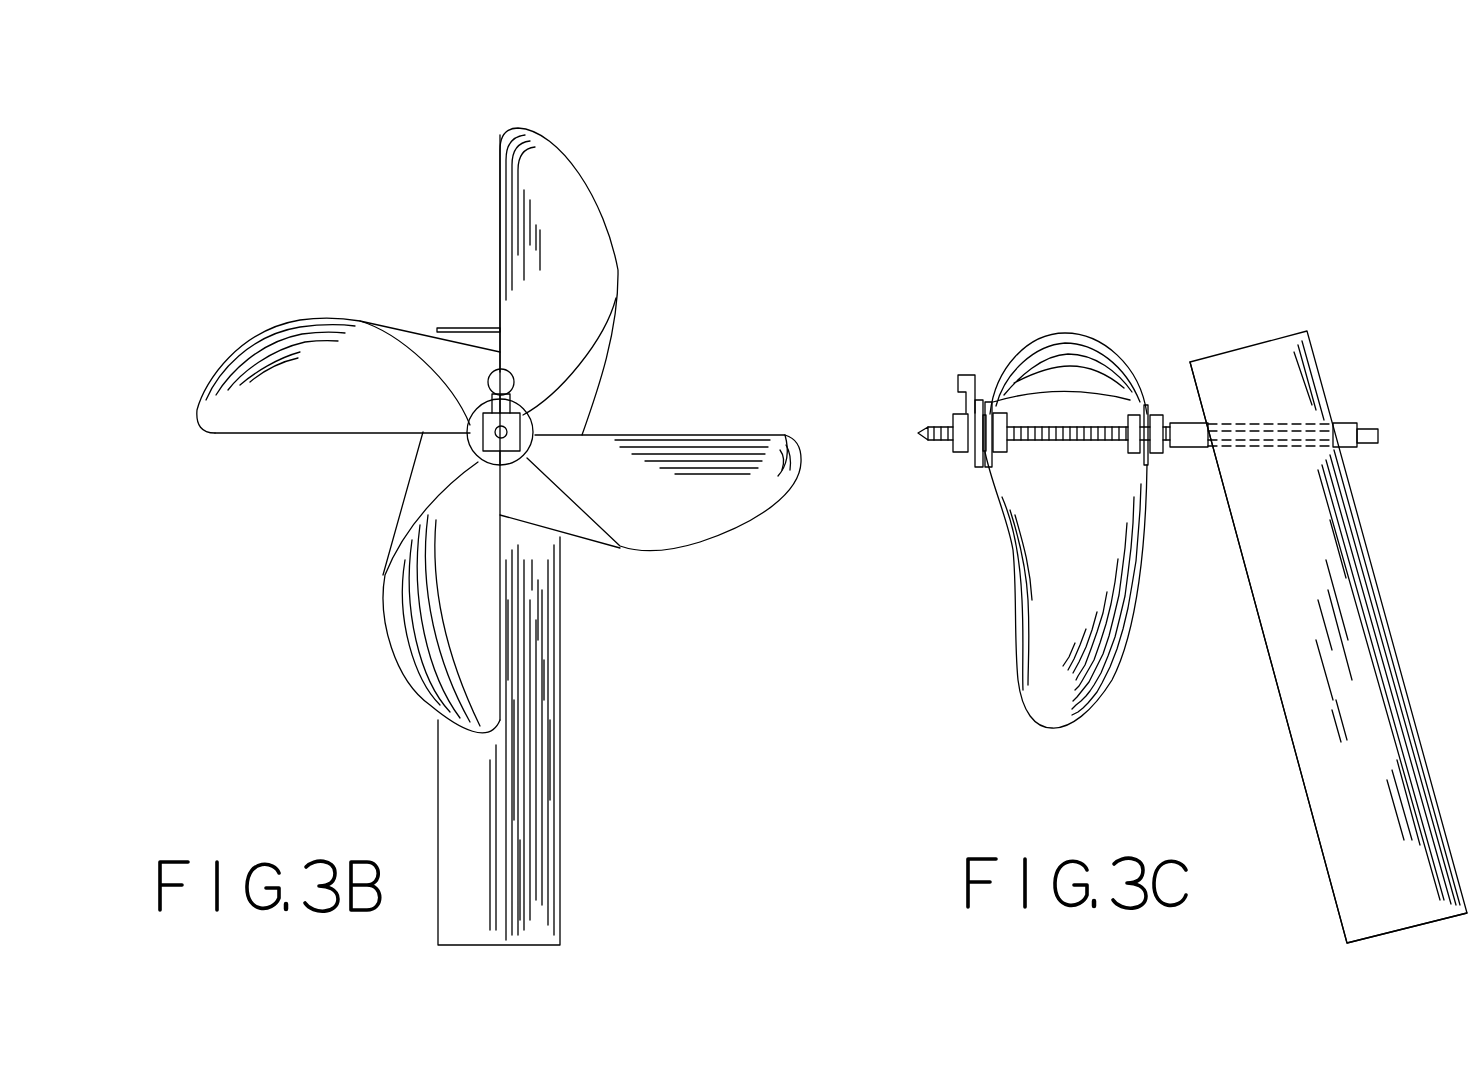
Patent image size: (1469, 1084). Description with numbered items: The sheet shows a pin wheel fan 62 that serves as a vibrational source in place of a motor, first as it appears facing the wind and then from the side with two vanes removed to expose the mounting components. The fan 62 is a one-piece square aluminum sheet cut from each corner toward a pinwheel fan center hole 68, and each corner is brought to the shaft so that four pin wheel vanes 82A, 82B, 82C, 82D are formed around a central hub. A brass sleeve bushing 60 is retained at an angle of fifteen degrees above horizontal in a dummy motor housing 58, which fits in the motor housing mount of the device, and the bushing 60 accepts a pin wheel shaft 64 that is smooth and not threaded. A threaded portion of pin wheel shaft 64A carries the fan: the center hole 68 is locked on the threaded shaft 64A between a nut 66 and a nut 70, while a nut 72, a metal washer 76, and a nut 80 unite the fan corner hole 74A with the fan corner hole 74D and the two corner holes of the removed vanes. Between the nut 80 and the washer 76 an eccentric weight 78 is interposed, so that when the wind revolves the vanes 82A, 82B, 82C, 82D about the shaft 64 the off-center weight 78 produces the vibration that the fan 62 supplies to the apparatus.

In FIG. 3B, the dummy motor housing 58 is at (482, 338).
In FIG. 3C, the dummy motor housing 58 is at (1336, 800).
In FIG. 3C, the sleeve bushing 60 is at (1340, 425).
In FIG. 3B, the pin wheel fan 62 is at (502, 423).
In FIG. 3C, the pin wheel shaft 64 is at (1180, 447).
In FIG. 3B, the threaded portion of pin wheel shaft 64A is at (503, 432).
In FIG. 3C, the threaded portion of pin wheel shaft 64A is at (932, 422).
In FIG. 3C, the nut 66 is at (1158, 415).
In FIG. 3C, the pinwheel fan center hole 68 is at (1147, 405).
In FIG. 3C, the nut 70 is at (1135, 452).
In FIG. 3C, the nut 72 is at (1000, 450).
In FIG. 3C, the fan corner hole 74A is at (967, 448).
In FIG. 3C, the fan corner hole 74D is at (982, 462).
In FIG. 3B, the metal washer 76 is at (533, 437).
In FIG. 3C, the metal washer 76 is at (986, 410).
In FIG. 3B, the eccentric weight 78 is at (503, 382).
In FIG. 3C, the eccentric weight 78 is at (968, 385).
In FIG. 3B, the nut 80 is at (470, 432).
In FIG. 3C, the nut 80 is at (957, 444).
In FIG. 3B, the pinwheel vane 82A is at (548, 163).
In FIG. 3B, the pinwheel vane 82B is at (785, 435).
In FIG. 3B, the pinwheel vane 82C is at (430, 702).
In FIG. 3C, the pinwheel vane 82C is at (1028, 712).
In FIG. 3B, the pinwheel vane 82D is at (264, 398).
In FIG. 3C, the pinwheel vane 82D is at (1042, 352).